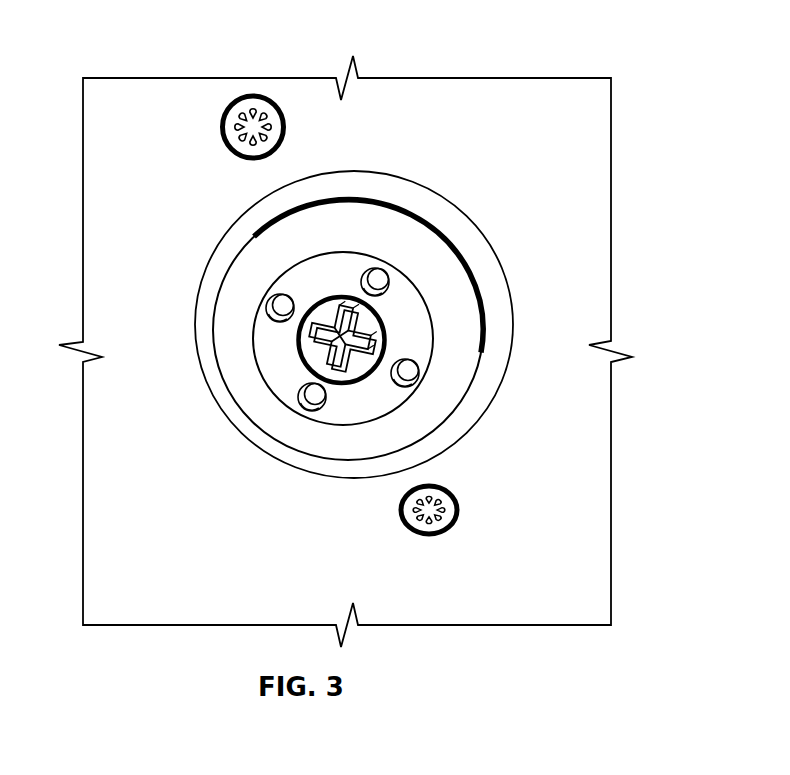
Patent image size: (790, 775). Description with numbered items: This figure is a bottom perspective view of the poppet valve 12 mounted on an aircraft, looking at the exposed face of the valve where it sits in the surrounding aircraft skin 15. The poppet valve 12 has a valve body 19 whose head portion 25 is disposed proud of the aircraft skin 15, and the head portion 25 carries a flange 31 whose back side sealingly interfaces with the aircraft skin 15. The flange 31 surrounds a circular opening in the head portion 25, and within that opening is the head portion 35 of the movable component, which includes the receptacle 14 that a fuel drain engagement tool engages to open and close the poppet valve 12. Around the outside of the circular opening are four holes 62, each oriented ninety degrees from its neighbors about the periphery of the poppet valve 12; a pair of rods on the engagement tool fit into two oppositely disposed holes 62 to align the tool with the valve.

The poppet valve 12 is at (447, 224).
The receptacle 14 is at (372, 333).
The aircraft skin 15 is at (594, 527).
The valve body 19 is at (275, 382).
The head portion 25 is at (312, 265).
The flange 31 is at (268, 347).
The head portion 35 is at (353, 321).
The holes 62 is at (283, 298).